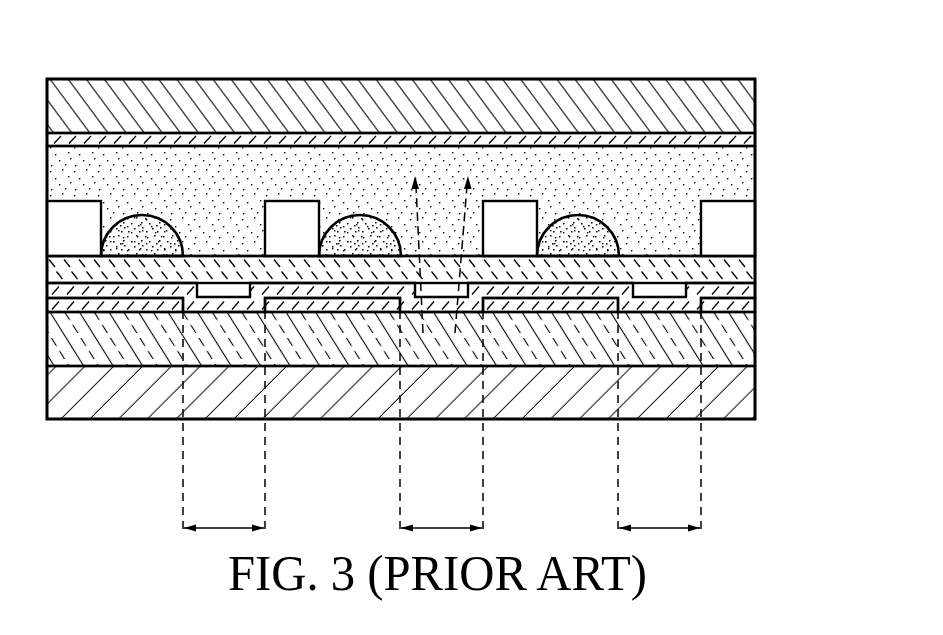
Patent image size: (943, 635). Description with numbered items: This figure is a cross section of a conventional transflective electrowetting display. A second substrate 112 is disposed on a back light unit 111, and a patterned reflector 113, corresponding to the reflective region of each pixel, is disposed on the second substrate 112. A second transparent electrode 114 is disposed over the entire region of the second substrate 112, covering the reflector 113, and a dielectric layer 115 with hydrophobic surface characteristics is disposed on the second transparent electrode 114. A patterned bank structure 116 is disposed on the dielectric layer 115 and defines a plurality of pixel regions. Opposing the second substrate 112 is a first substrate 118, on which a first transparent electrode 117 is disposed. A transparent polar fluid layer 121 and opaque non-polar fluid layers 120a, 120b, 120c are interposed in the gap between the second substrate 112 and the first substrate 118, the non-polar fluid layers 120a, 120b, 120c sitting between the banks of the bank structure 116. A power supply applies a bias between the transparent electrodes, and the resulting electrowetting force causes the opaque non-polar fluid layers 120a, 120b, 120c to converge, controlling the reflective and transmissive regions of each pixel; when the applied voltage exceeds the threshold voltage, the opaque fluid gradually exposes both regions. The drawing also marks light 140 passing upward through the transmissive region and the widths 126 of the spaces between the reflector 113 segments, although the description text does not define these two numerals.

The back light unit 111 is at (738, 392).
The second substrate 112 is at (738, 337).
The patterned reflector 113 is at (753, 305).
The second transparent electrode 114 is at (745, 290).
The dielectric layer 115 is at (738, 269).
The patterned bank structure 116 is at (740, 228).
The first transparent electrode 117 is at (745, 140).
The first substrate 118 is at (740, 104).
The transparent polar fluid layer 121 is at (740, 171).
The opaque non-polar fluid layer 120a is at (142, 214).
The opaque non-polar fluid layer 120b is at (360, 214).
The opaque non-polar fluid layer 120c is at (578, 214).
The emitted light 140 is at (418, 228).
The gap region 126 is at (442, 416).